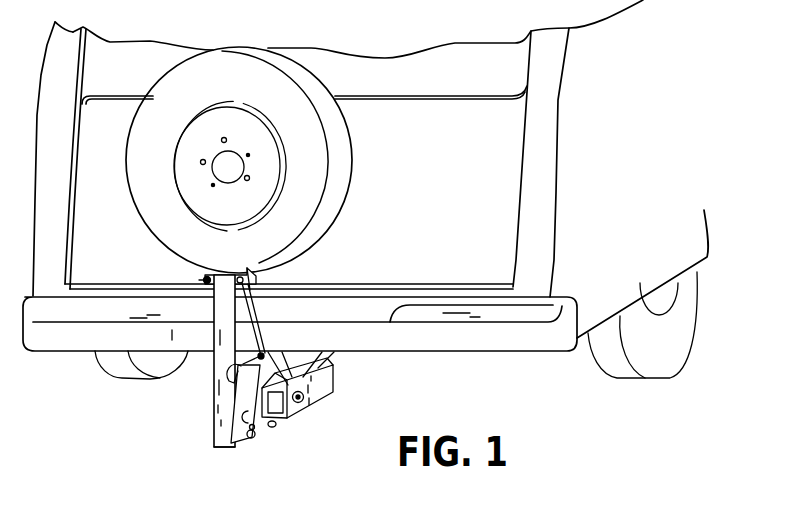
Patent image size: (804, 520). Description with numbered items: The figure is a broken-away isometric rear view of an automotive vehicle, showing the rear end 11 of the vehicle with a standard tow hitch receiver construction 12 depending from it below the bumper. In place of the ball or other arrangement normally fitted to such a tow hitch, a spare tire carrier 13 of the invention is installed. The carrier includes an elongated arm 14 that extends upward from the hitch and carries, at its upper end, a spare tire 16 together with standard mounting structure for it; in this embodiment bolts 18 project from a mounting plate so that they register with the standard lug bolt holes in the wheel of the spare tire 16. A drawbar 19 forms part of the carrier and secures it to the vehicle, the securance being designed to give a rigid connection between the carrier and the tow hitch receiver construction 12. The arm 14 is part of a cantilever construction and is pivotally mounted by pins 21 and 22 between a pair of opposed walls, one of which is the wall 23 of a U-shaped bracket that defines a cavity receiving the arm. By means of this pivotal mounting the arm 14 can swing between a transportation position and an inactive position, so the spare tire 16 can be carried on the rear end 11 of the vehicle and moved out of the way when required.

The rear end 11 is at (447, 209).
The tow hitch receiver construction 12 is at (318, 387).
The spare tire carrier 13 is at (362, 276).
The elongated arm 14 is at (213, 395).
The spare tire 16 is at (348, 133).
The bolts 18 is at (225, 138).
The drawbar 19 is at (269, 419).
The pin 21 is at (213, 442).
The pin 22 is at (256, 436).
The wall 23 is at (213, 412).